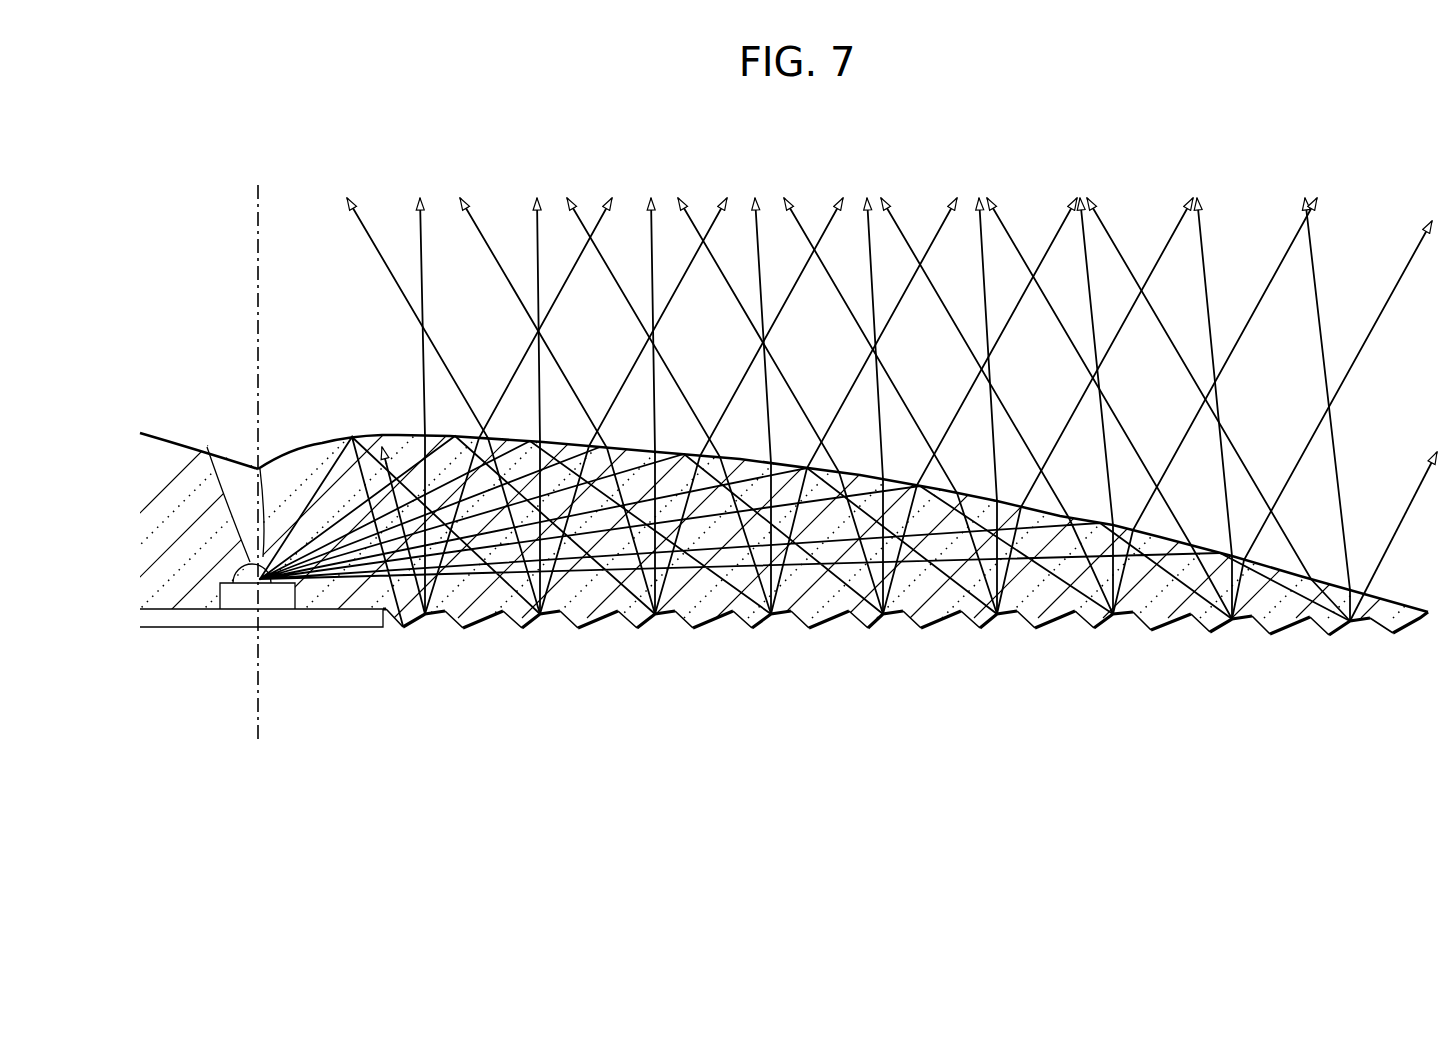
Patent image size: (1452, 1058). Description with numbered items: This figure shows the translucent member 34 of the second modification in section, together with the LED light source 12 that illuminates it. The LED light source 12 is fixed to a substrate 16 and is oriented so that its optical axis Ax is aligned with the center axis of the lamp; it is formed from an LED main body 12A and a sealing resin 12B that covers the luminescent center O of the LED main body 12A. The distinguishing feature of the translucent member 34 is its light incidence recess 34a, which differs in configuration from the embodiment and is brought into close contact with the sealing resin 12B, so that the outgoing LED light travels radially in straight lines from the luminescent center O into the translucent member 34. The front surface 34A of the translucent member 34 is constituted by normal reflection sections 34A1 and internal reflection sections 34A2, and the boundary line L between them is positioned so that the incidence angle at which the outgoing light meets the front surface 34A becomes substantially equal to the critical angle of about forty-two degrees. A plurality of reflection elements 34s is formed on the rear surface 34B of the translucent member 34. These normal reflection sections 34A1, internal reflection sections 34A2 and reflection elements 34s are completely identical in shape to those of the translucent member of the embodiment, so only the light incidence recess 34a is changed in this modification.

The optical axis Ax is at (258, 252).
The translucent member 34 is at (743, 531).
The front surface 34A is at (843, 474).
The normal reflection section 34A1 is at (322, 442).
The internal reflection section 34A2 is at (641, 446).
The light incidence recess 34a is at (207, 447).
The rear surface 34B is at (905, 667).
The reflection elements 34s is at (1003, 630).
The boundary line L is at (397, 435).
The LED light source 12 is at (256, 644).
The LED main body 12A is at (243, 600).
The sealing resin 12B is at (240, 566).
The luminescent center O is at (262, 583).
The substrate 16 is at (295, 633).